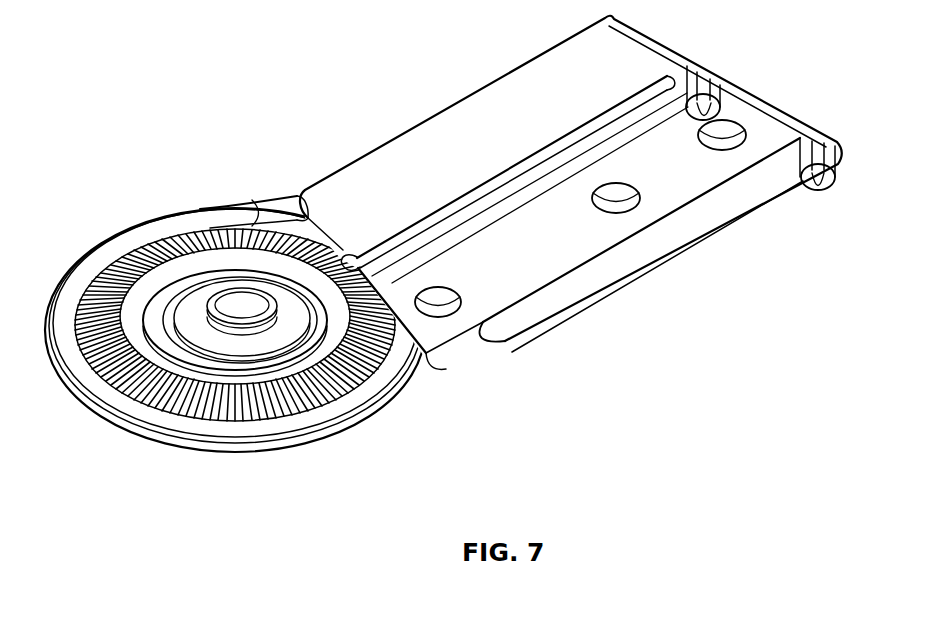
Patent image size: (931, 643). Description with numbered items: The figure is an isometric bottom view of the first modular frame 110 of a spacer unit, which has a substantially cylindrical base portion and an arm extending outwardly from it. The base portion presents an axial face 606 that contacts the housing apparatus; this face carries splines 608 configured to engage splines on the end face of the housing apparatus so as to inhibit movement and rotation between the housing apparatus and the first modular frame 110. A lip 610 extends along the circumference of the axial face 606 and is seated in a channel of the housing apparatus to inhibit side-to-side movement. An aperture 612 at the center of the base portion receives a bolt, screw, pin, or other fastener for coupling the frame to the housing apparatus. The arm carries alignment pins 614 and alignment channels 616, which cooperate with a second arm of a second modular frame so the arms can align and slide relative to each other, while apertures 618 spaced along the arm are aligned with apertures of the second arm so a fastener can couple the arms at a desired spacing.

The first modular frame 110 is at (147, 53).
The axial face 606 is at (269, 330).
The splines 608 is at (153, 281).
The lip 610 is at (162, 441).
The aperture 612 is at (242, 322).
The alignment pins 614 is at (713, 103).
The alignment channels 616 is at (523, 205).
The apertures 618 is at (610, 212).